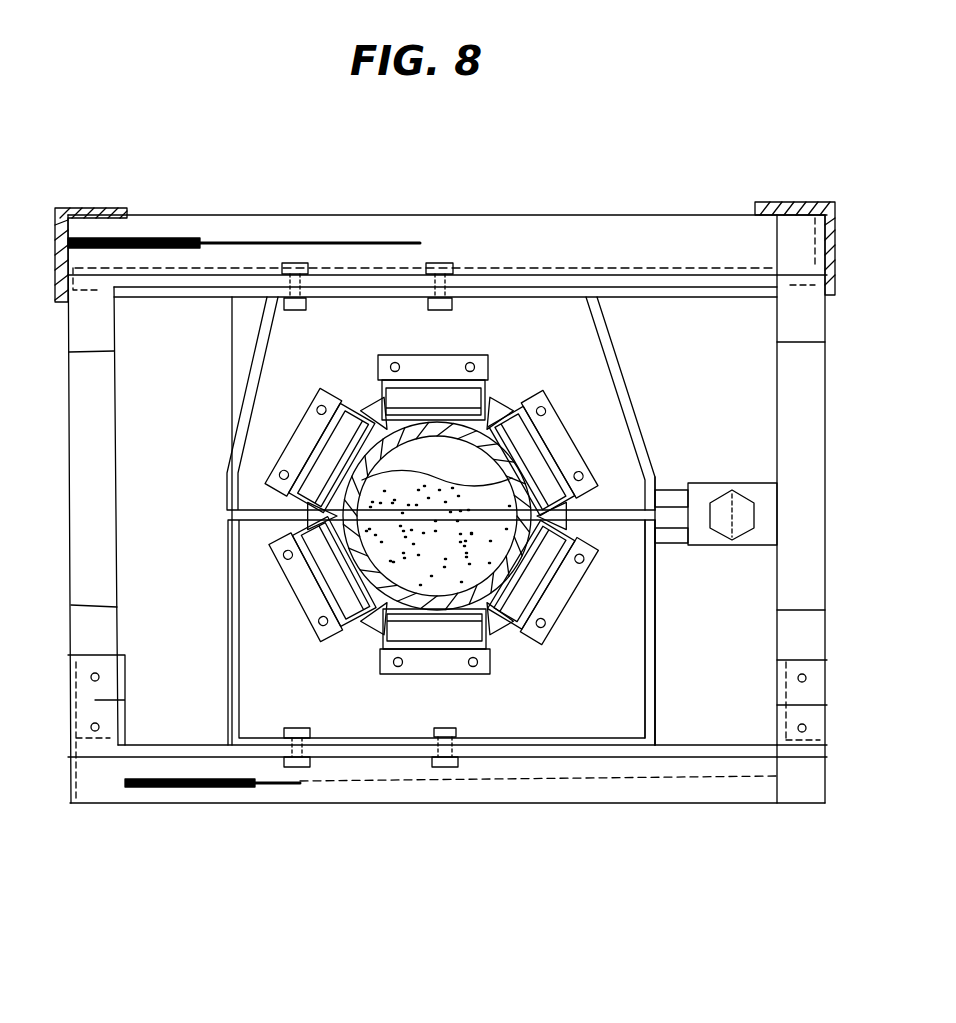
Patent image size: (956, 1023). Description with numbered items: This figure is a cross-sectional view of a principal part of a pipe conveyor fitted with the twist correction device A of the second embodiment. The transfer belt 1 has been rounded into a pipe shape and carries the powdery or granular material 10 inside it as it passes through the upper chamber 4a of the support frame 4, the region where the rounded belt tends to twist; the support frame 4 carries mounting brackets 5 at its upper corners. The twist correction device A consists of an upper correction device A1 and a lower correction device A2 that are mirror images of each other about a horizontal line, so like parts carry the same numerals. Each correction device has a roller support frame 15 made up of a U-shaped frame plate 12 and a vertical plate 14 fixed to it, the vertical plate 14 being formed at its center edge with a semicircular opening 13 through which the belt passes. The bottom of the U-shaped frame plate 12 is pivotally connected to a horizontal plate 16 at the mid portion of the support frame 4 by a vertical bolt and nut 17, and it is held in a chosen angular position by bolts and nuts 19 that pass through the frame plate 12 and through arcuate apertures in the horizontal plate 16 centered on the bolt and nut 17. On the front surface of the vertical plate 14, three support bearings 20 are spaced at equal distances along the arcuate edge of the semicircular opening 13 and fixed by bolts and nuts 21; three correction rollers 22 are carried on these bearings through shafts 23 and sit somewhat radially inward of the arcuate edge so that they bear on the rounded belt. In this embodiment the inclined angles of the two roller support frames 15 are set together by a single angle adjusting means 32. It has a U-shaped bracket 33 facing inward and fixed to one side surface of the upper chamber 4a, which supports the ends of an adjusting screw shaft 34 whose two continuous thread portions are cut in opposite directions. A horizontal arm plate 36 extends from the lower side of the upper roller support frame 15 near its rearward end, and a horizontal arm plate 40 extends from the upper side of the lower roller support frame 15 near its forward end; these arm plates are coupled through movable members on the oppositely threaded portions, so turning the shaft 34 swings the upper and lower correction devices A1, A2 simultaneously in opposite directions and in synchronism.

The transfer belt 1 is at (492, 758).
The support frame 4 is at (188, 200).
The upper chamber 4a is at (165, 317).
The mounting bracket 5 is at (90, 207).
The powdery or granular material 10 is at (425, 612).
The U-shaped frame plate 12 is at (228, 428).
The semicircular opening 13 is at (498, 420).
The vertical plate 14 is at (626, 402).
The roller support frame 15 is at (622, 337).
The horizontal plate 16 is at (220, 290).
The vertical bolt and nut 17 is at (443, 262).
The bolts and nuts 19 is at (293, 262).
The support bearings 20 is at (458, 352).
The bolts and nuts 21 is at (374, 356).
The correction rollers 22 is at (402, 358).
The shafts 23 is at (378, 412).
The angle adjusting means 32 is at (716, 486).
The U-shaped bracket 33 is at (760, 545).
The adjusting screw shaft 34 is at (735, 498).
The horizontal arm plate 36 is at (676, 488).
The horizontal arm plate 40 is at (676, 545).
The twist correction device A is at (372, 260).
The upper correction device A1 is at (212, 462).
The lower correction device A2 is at (212, 565).